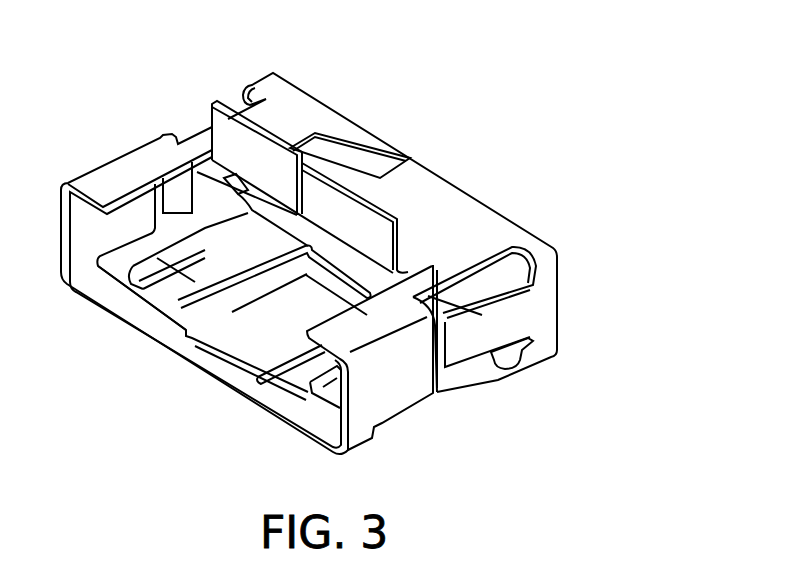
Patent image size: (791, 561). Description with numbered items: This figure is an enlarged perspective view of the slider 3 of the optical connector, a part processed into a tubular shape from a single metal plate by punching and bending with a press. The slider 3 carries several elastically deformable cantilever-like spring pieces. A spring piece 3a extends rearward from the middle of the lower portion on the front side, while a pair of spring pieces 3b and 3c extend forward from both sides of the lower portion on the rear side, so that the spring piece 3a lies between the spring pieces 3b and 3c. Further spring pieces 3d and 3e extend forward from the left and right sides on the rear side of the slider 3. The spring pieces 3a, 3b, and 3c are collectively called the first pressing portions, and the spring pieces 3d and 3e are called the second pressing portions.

The slider 3 is at (380, 126).
The spring piece 3a is at (253, 335).
The spring piece 3b is at (163, 273).
The spring piece 3c is at (312, 393).
The spring piece 3d is at (300, 215).
The spring piece 3e is at (483, 327).